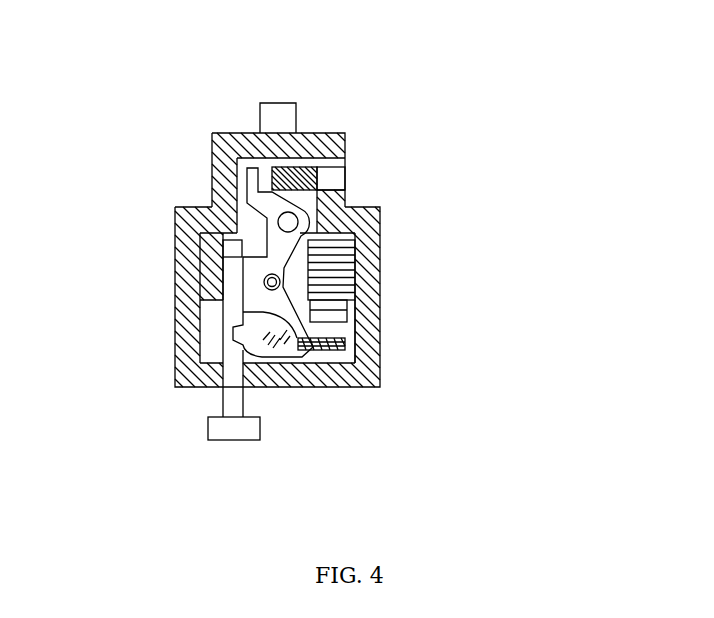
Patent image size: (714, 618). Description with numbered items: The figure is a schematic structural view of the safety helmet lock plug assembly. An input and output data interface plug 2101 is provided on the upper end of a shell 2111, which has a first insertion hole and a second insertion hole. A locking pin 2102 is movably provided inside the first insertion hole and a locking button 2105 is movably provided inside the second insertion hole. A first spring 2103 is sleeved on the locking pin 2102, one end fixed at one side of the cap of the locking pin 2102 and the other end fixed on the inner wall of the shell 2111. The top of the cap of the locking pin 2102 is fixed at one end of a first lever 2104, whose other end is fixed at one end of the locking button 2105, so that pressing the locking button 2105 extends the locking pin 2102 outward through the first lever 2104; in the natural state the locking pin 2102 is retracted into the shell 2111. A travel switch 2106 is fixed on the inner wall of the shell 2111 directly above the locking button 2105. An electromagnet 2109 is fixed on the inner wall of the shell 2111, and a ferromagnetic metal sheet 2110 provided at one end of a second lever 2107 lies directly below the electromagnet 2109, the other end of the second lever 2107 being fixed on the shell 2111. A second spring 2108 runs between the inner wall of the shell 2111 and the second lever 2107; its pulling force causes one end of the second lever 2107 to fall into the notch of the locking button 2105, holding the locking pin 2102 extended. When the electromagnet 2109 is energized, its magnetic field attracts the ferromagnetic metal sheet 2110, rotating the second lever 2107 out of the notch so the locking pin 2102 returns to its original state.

The input and output data interface plug 2101 is at (277, 103).
The locking pin 2102 is at (343, 170).
The first spring 2103 is at (313, 168).
The first lever 2104 is at (243, 187).
The locking button 2105 is at (208, 430).
The travel switch 2106 is at (223, 248).
The second lever 2107 is at (357, 345).
The second spring 2108 is at (277, 358).
The electromagnet 2109 is at (355, 295).
The ferromagnetic metal sheet 2110 is at (333, 355).
The shell 2111 is at (187, 349).